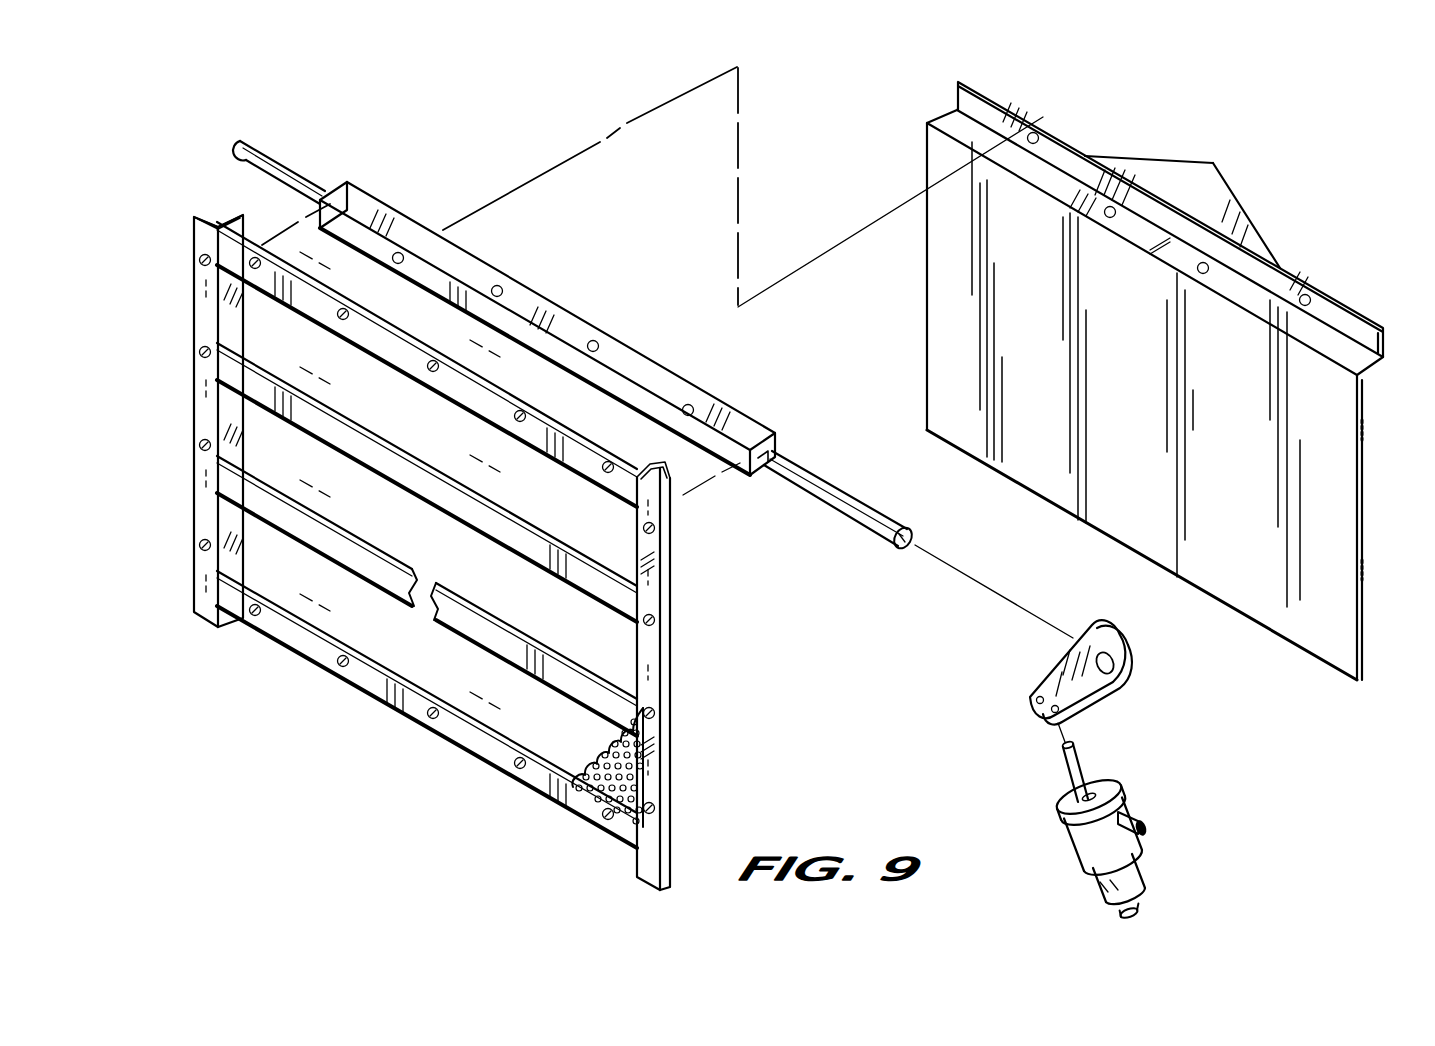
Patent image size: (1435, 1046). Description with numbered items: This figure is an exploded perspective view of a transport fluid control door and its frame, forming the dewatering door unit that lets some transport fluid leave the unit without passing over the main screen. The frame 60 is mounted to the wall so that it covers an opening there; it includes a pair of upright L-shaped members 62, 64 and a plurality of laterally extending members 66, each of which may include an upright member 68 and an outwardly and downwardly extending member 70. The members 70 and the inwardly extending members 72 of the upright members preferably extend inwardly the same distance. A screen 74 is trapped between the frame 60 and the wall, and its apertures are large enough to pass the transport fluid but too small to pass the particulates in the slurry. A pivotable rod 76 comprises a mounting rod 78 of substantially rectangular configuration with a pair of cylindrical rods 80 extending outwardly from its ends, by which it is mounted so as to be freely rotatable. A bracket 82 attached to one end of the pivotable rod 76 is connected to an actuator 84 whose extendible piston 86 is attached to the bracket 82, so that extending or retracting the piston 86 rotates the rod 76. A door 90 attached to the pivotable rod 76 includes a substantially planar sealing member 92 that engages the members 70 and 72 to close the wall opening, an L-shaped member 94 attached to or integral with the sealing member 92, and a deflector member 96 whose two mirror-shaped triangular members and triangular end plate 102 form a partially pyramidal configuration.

The frame 60 is at (683, 683).
The upright L-shaped member 62 is at (675, 583).
The upright L-shaped member 64 is at (198, 318).
The laterally extending members 66 is at (458, 407).
The upright member 68 is at (400, 565).
The outwardly and downwardly extending member 70 is at (428, 620).
The inwardly extending members 72 is at (224, 212).
The screen 74 is at (595, 790).
The pivotable rod 76 is at (436, 152).
The mounting rod 78 is at (592, 320).
The cylindrical rods 80 is at (285, 150).
The bracket 82 is at (1038, 666).
The actuator 84 is at (1128, 800).
The extendible piston 86 is at (1085, 760).
The door 90 is at (928, 297).
The sealing member 92 is at (1125, 518).
The L-shaped member 94 is at (948, 92).
The deflector member 96 is at (1244, 190).
The end plate 102 is at (1186, 165).